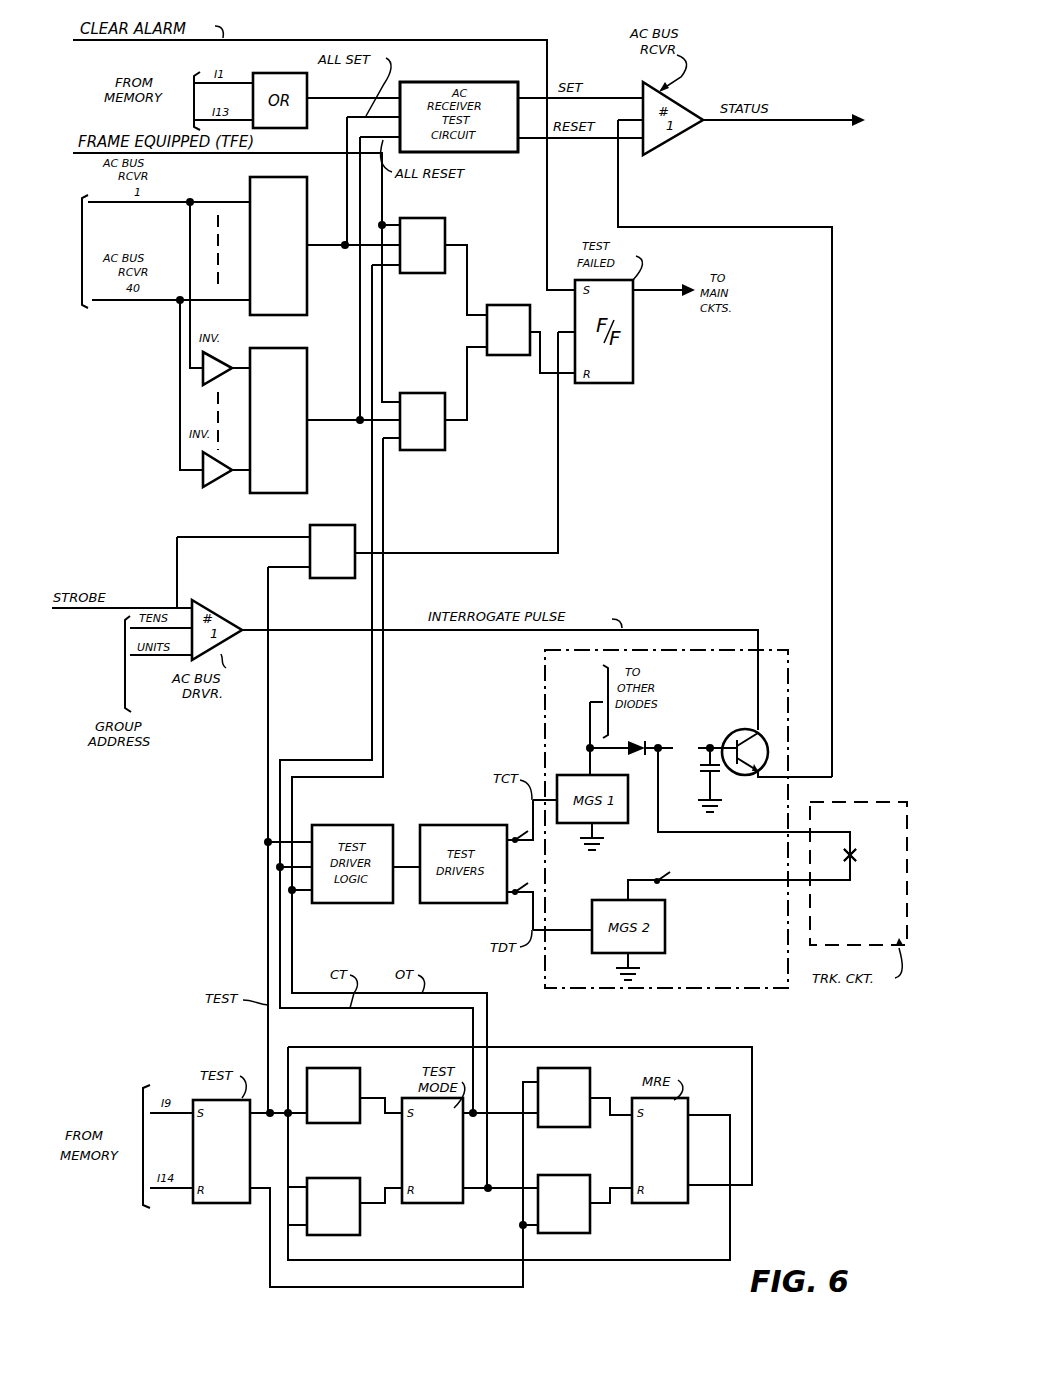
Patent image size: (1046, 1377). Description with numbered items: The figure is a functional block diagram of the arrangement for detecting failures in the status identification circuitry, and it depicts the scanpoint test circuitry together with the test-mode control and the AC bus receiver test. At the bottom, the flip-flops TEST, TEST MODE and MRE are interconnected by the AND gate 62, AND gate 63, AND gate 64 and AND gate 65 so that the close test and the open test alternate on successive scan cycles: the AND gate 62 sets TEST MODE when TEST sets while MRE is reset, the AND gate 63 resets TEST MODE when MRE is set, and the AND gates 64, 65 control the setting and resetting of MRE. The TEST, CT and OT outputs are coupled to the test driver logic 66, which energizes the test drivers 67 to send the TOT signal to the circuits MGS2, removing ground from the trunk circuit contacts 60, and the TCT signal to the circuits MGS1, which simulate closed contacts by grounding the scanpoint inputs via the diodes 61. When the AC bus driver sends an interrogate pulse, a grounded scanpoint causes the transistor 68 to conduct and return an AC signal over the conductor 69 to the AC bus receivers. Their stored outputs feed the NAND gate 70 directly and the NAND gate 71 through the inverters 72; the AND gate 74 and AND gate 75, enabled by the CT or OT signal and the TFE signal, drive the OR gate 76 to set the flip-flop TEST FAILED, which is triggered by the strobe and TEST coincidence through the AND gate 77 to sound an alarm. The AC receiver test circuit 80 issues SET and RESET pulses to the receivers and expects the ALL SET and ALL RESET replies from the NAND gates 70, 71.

The AC receiver test circuit 80 is at (496, 84).
The AND gate 74 is at (426, 217).
The AND gate 75 is at (426, 391).
The OR gate 76 is at (514, 304).
The AND gate 77 is at (346, 525).
The NAND gate 70 is at (287, 271).
The NAND gate 71 is at (287, 446).
The inverters 72 is at (211, 386).
The test driver logic 66 is at (362, 901).
The test drivers 67 is at (463, 901).
The transistor 68 is at (739, 729).
The conductor 69 is at (833, 713).
The diode 61 is at (628, 752).
The trunk ticketing contact 60 is at (855, 858).
The AND gate 62 is at (338, 1123).
The AND gate 63 is at (356, 1234).
The AND gate 64 is at (571, 1127).
The AND gate 65 is at (586, 1233).